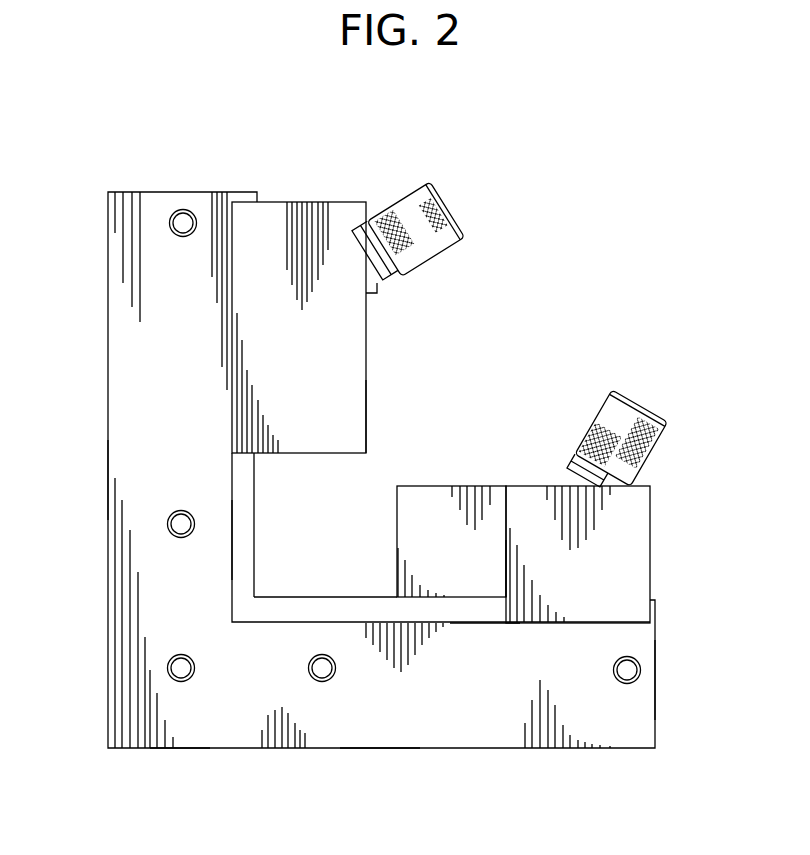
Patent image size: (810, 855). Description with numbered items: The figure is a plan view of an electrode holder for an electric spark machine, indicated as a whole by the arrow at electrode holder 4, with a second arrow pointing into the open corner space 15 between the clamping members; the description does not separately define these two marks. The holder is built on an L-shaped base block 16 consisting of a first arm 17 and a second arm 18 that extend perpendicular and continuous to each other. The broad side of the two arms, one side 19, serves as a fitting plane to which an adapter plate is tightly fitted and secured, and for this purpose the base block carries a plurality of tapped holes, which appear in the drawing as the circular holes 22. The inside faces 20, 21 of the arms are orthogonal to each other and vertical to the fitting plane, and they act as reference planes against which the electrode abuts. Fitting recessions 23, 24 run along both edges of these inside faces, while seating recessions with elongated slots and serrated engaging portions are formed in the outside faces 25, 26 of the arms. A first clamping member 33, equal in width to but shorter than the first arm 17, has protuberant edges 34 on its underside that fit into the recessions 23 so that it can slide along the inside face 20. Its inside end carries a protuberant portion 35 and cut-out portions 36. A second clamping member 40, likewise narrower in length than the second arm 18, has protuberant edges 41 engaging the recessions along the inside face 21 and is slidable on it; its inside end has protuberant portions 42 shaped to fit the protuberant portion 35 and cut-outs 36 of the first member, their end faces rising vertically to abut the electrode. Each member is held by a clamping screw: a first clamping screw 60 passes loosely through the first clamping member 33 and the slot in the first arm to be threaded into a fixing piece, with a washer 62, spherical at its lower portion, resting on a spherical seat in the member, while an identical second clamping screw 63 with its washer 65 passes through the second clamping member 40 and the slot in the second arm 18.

The corner connector assembly 4 is at (595, 250).
The corner region 15 is at (514, 266).
The L-shaped base block 16 is at (178, 752).
The first arm 17 is at (447, 720).
The second arm 18 is at (139, 365).
The one side of the arms (fitting plane) 19 is at (147, 617).
The inside face of the first arm 20 is at (342, 592).
The inside face of the second arm 21 is at (260, 490).
The mounting holes 22 is at (178, 224).
The fitting recession of the first arm 23 is at (484, 618).
The fitting recession of the second arm 24 is at (232, 545).
The outside face of the first arm 25 is at (381, 754).
The outside face of the second arm 26 is at (104, 479).
The first clamping member 33 is at (632, 528).
The protuberant edges of the first clamping member 34 is at (577, 617).
The protuberant portion of the first clamping member 35 is at (448, 493).
The cut-out portions of the first clamping member 36 is at (498, 558).
The second clamping member 40 is at (318, 210).
The protuberant edges of the second clamping member 41 is at (243, 235).
The protuberant portions of the second clamping member 42 is at (331, 427).
The first clamping screw 60 is at (598, 408).
The washer 62 is at (560, 470).
The second clamping screw 63 is at (418, 182).
The washer 65 is at (386, 284).